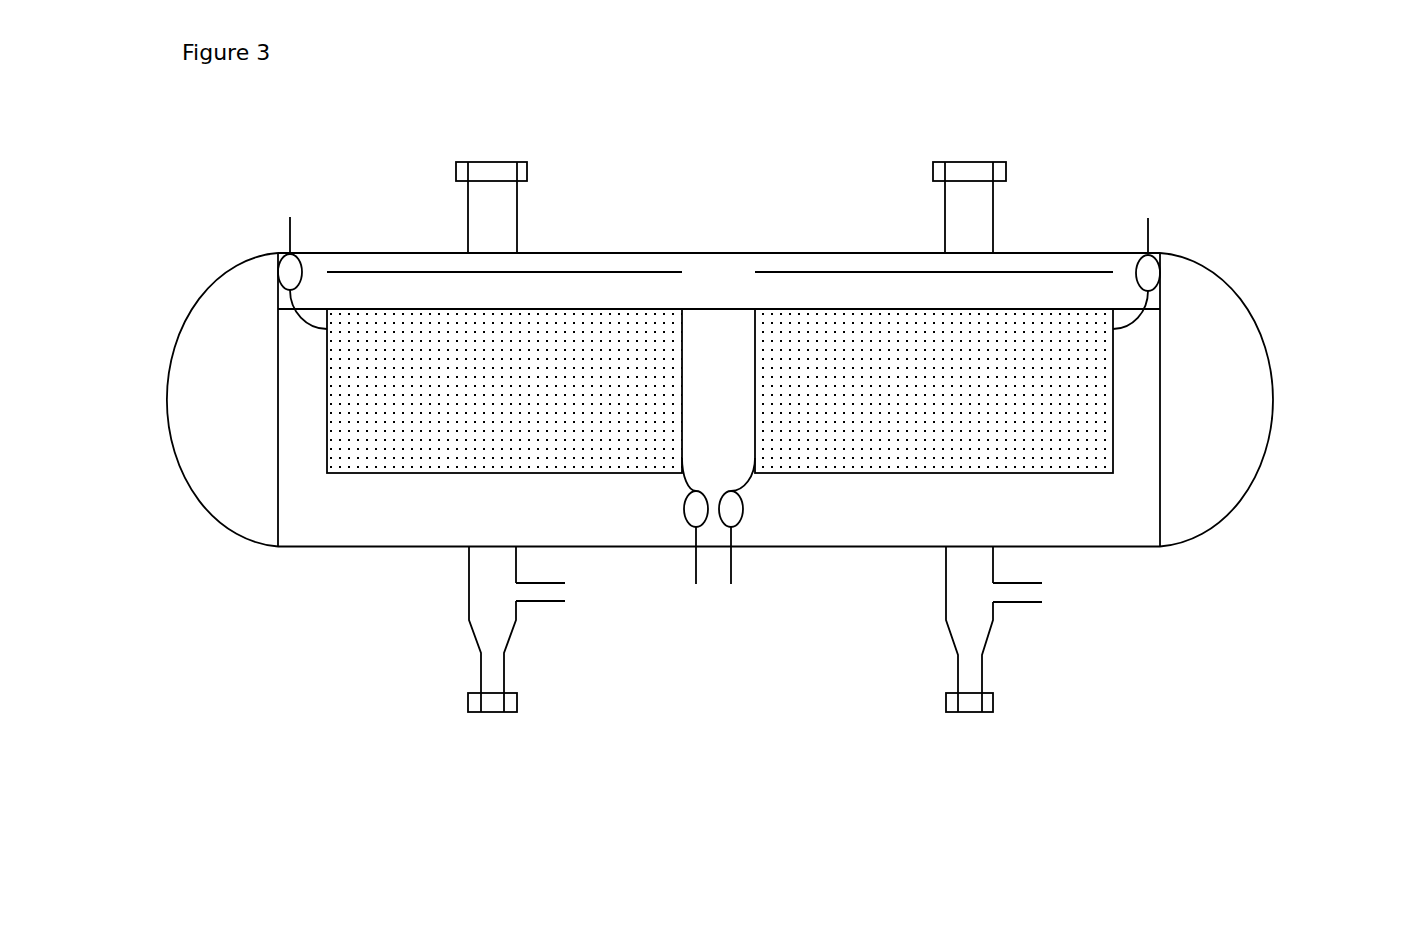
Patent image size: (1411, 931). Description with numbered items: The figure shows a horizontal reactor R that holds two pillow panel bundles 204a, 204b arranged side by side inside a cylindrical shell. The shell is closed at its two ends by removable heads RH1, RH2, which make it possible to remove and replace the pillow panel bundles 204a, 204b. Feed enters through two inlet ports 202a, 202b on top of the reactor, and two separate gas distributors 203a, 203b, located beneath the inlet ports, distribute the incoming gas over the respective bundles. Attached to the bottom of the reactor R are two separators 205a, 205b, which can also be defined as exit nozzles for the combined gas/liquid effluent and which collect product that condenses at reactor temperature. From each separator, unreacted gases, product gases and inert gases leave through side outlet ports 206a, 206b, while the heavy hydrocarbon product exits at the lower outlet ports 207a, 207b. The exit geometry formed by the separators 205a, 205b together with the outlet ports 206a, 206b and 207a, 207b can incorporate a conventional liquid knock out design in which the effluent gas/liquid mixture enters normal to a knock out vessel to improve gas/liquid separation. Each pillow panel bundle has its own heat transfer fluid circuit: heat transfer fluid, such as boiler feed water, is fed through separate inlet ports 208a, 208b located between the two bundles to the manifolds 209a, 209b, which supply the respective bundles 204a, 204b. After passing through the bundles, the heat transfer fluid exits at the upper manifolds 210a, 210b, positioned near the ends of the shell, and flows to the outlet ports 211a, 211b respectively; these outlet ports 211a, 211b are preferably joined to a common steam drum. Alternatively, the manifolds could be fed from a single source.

The reactor R is at (1303, 308).
The removable head RH1 is at (147, 342).
The removable head RH2 is at (1302, 404).
The inlet port 202a is at (542, 170).
The inlet port 202b is at (1018, 172).
The gas distributor 203a is at (540, 272).
The gas distributor 203b is at (1003, 272).
The pillow panel bundle 204a is at (665, 333).
The pillow panel bundle 204b is at (880, 345).
The separator 205a is at (452, 587).
The separator 205b is at (939, 579).
The outlet port 206a is at (553, 610).
The outlet port 206b is at (1032, 617).
The outlet port 207a is at (452, 713).
The outlet port 207b is at (1005, 722).
The inlet port 208a is at (688, 589).
The inlet port 208b is at (737, 593).
The manifold 209a is at (677, 525).
The manifold 209b is at (750, 522).
The manifold 210a is at (293, 268).
The manifold 210b is at (1150, 277).
The outlet port 211a is at (277, 215).
The outlet port 211b is at (1163, 215).